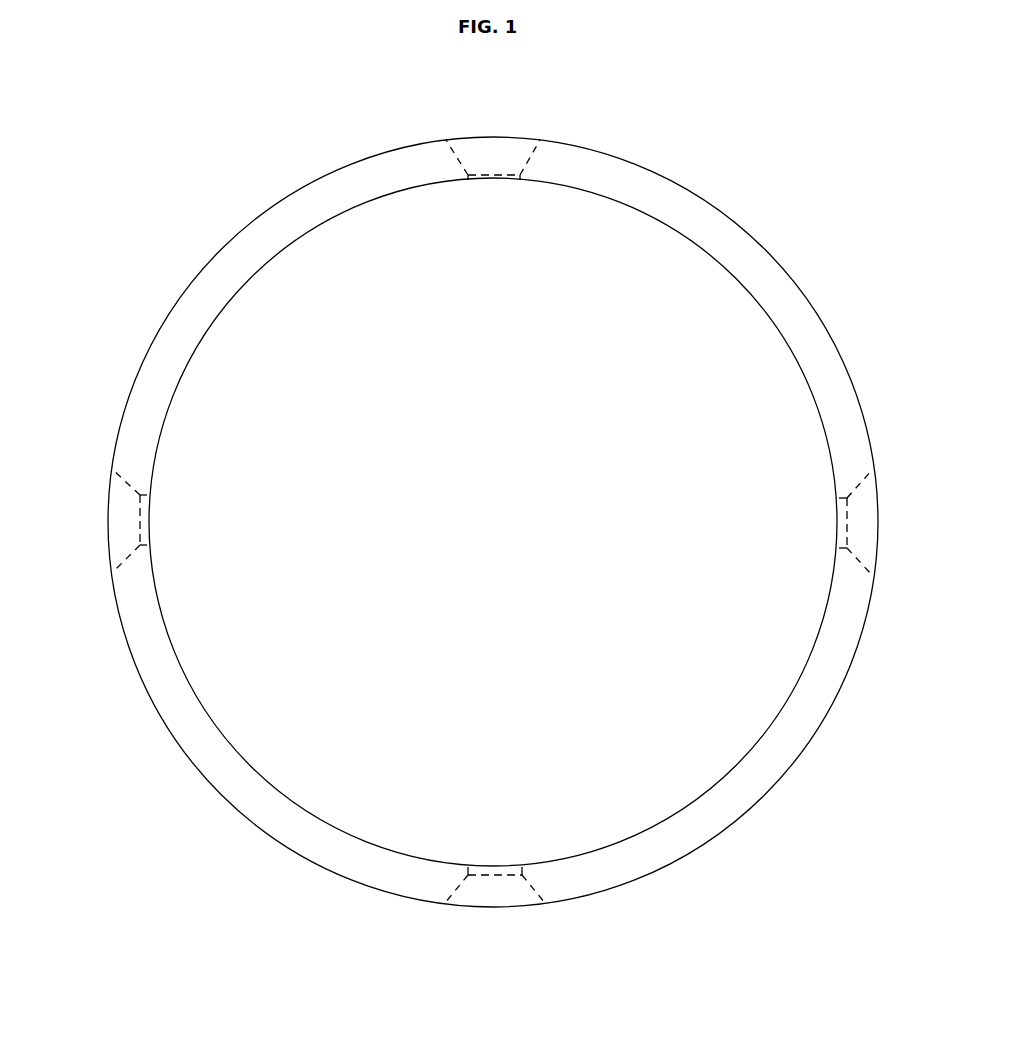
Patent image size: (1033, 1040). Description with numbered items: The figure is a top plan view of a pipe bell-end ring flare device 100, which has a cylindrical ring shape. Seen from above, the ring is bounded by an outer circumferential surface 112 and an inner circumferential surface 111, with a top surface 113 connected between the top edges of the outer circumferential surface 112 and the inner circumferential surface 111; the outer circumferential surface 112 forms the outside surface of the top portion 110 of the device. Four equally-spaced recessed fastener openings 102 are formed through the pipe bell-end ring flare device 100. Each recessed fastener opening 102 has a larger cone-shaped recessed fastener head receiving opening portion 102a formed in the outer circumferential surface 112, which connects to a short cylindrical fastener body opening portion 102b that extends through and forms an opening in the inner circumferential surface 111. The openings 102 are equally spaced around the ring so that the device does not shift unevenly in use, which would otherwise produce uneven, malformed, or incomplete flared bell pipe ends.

The pipe bell-end ring flare device 100 is at (199, 95).
The recessed fastener opening 102 is at (464, 145).
The cone-shaped recessed fastener head receiving opening portion 102a is at (490, 150).
The cylindrical fastener body opening portion 102b is at (508, 160).
The top portion 110 is at (655, 891).
The inner circumferential surface 111 is at (208, 328).
The outer circumferential surface 112 is at (202, 272).
The top surface 113 is at (165, 362).